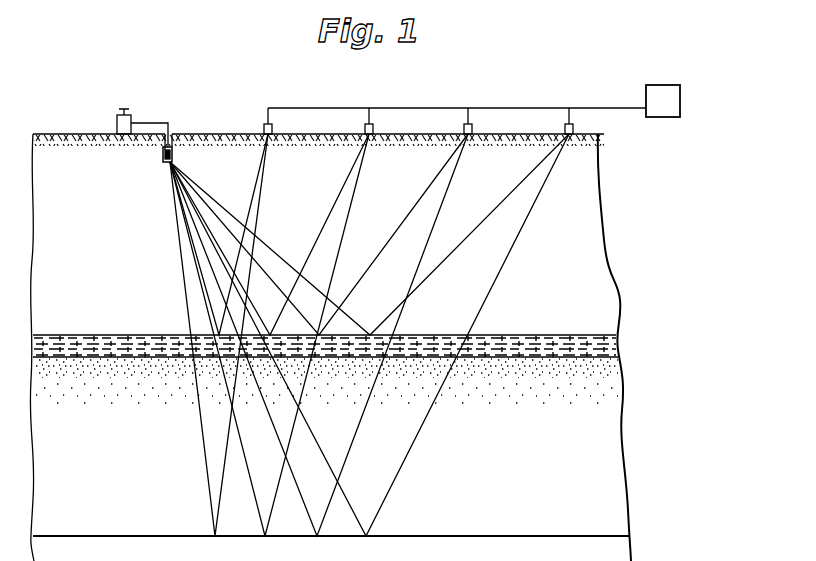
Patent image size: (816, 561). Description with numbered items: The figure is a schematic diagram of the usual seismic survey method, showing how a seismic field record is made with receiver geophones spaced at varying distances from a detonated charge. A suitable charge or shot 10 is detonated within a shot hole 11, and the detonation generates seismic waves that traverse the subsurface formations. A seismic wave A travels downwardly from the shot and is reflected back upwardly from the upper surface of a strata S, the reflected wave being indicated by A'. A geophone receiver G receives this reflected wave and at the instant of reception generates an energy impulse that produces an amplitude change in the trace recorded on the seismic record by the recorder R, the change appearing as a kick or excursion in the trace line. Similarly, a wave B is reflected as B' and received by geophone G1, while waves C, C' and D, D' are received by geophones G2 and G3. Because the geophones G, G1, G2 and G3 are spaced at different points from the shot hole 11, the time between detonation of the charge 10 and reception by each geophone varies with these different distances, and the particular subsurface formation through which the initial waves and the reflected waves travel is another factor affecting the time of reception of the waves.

The charge or shot 10 is at (166, 152).
The shot hole 11 is at (192, 135).
The geophone receiver G is at (266, 126).
The geophone G1 is at (372, 128).
The geophone G2 is at (472, 128).
The geophone G3 is at (572, 128).
The recorder R is at (682, 99).
The strata S is at (88, 358).
The seismic wave A is at (199, 234).
The wave B is at (269, 234).
The wave C is at (319, 234).
The wave D is at (369, 234).
The reflected wave A' is at (219, 335).
The reflected wave B' is at (269, 335).
The reflected wave C' is at (319, 335).
The reflected wave D' is at (369, 335).